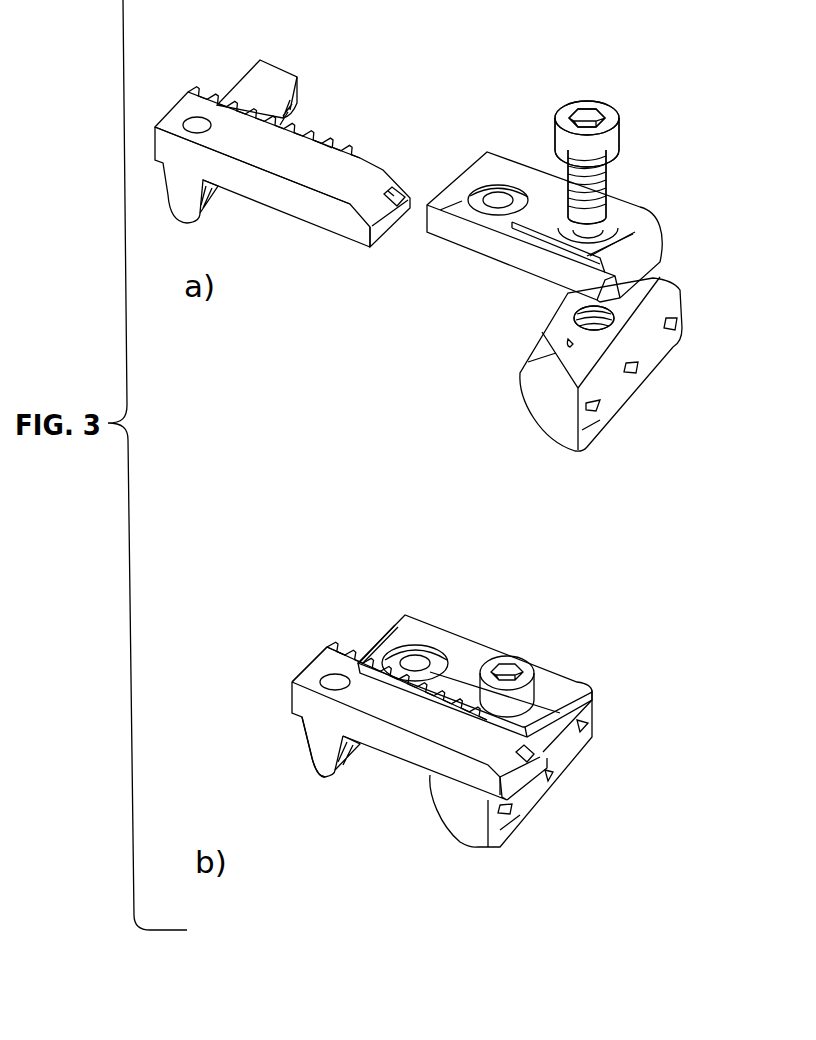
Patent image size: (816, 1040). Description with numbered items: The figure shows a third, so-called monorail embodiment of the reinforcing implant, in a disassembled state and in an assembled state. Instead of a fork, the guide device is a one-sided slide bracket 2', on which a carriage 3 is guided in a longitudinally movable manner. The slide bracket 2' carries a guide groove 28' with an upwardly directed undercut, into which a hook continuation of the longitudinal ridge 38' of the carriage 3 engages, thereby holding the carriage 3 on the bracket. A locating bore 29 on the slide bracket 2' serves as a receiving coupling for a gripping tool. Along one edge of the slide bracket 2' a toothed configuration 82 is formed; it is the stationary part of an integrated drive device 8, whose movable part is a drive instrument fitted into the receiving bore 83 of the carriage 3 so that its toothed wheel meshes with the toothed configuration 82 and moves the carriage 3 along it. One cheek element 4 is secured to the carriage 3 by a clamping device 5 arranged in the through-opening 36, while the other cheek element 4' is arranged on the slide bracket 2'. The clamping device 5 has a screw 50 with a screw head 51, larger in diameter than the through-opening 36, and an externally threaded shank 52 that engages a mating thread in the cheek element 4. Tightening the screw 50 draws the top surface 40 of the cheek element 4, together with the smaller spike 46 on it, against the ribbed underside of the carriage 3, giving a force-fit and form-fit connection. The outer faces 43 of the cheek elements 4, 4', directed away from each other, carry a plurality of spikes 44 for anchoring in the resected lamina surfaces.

The one-sided slide bracket 2' is at (351, 447).
The locating bore 29 is at (193, 122).
The cheek element 4' is at (271, 416).
The toothed configuration 82 is at (318, 138).
The guide groove 28' is at (459, 453).
The carriage 3 is at (488, 163).
The through-opening 36 is at (620, 220).
The longitudinal ridge 38' is at (650, 240).
The clamping device 5 is at (615, 95).
The screw 50 is at (586, 102).
The screw head 51 is at (608, 143).
The shank 52 is at (608, 182).
The cheek element 4 is at (554, 574).
The spike 46 is at (565, 342).
The spikes 44 is at (672, 330).
The top surface 40 is at (553, 360).
The outer face 43 is at (587, 427).
The drive device 8 is at (330, 623).
The receiving bore 83 is at (415, 660).